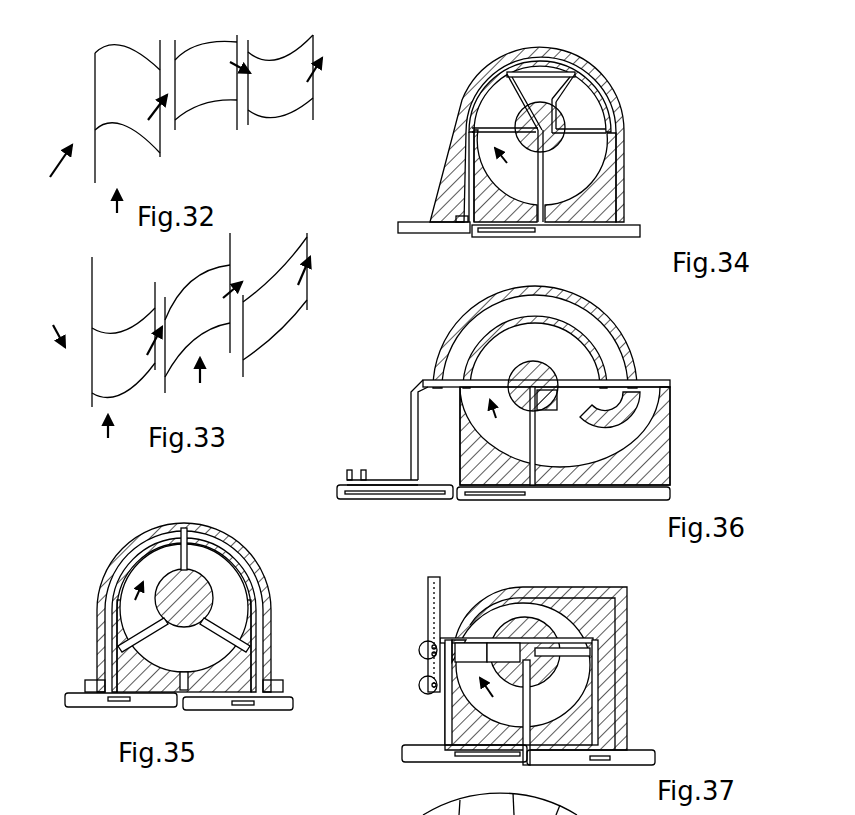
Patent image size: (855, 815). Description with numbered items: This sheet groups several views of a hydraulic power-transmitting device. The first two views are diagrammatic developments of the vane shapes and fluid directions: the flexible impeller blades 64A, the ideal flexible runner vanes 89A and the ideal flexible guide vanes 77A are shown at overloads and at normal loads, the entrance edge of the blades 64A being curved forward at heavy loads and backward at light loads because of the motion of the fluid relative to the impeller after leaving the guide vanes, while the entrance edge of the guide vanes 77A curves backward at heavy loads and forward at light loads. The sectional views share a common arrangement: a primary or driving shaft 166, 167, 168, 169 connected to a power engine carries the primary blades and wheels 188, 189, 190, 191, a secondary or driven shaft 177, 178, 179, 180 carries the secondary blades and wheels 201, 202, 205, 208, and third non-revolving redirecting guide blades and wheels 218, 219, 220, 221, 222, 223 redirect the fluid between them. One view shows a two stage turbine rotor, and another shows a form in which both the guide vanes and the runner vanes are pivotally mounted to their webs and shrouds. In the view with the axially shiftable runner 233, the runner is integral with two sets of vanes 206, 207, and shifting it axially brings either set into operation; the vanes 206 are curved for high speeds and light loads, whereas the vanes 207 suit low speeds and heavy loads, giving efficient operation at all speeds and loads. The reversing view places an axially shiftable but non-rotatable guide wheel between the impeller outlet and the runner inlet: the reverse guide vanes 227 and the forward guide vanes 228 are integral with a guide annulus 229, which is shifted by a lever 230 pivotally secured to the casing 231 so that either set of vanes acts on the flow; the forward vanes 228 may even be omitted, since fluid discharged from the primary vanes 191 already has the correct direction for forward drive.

In FIG. 32, the flexible impeller blades 64A is at (148, 62).
In FIG. 33, the flexible impeller blades 64A is at (143, 337).
In FIG. 32, the flexible runner vanes 89A is at (190, 73).
In FIG. 33, the flexible runner vanes 89A is at (182, 342).
In FIG. 32, the flexible guide vanes 77A is at (263, 73).
In FIG. 33, the flexible guide vanes 77A is at (262, 340).
In FIG. 34, the primary shaft 166 is at (634, 237).
In FIG. 35, the primary shaft 167 is at (100, 708).
In FIG. 36, the primary shaft 168 is at (632, 500).
In FIG. 37, the primary shaft 169 is at (455, 762).
In FIG. 34, the secondary shaft 177 is at (449, 236).
In FIG. 35, the secondary shaft 178 is at (292, 711).
In FIG. 36, the secondary shaft 179 is at (395, 499).
In FIG. 37, the secondary shaft 180 is at (628, 752).
In FIG. 34, the primary blades and wheel 188 is at (505, 176).
In FIG. 35, the primary blades and wheel 189 is at (146, 602).
In FIG. 36, the primary blades and wheel 190 is at (507, 422).
In FIG. 37, the primary blades and wheel 191 is at (500, 698).
In FIG. 34, the secondary blades and wheel 201 is at (505, 115).
In FIG. 34, the secondary blades and wheel 202 is at (579, 116).
In FIG. 35, the secondary blades and wheel 205 is at (225, 602).
In FIG. 36, the runner vanes 206 is at (535, 352).
In FIG. 36, the runner vanes 207 is at (535, 337).
In FIG. 37, the secondary blades and wheel 208 is at (542, 674).
In FIG. 34, the redirecting guide blades and wheel 218 is at (580, 177).
In FIG. 34, the redirecting guide blades and wheel 219 is at (541, 101).
In FIG. 35, the redirecting guide blades and wheel 220 is at (184, 618).
In FIG. 36, the redirecting guide blades and wheel 221 is at (563, 405).
In FIG. 36, the redirecting guide blades and wheel 222 is at (621, 410).
In FIG. 37, the redirecting guide blades and wheel 223 is at (523, 665).
In FIG. 37, the reverse guide vanes 227 is at (503, 652).
In FIG. 37, the forward guide vanes 228 is at (471, 652).
In FIG. 37, the guide annulus 229 is at (425, 650).
In FIG. 37, the lever 230 is at (434, 620).
In FIG. 37, the casing 231 is at (625, 668).
In FIG. 36, the runner 233 is at (425, 375).